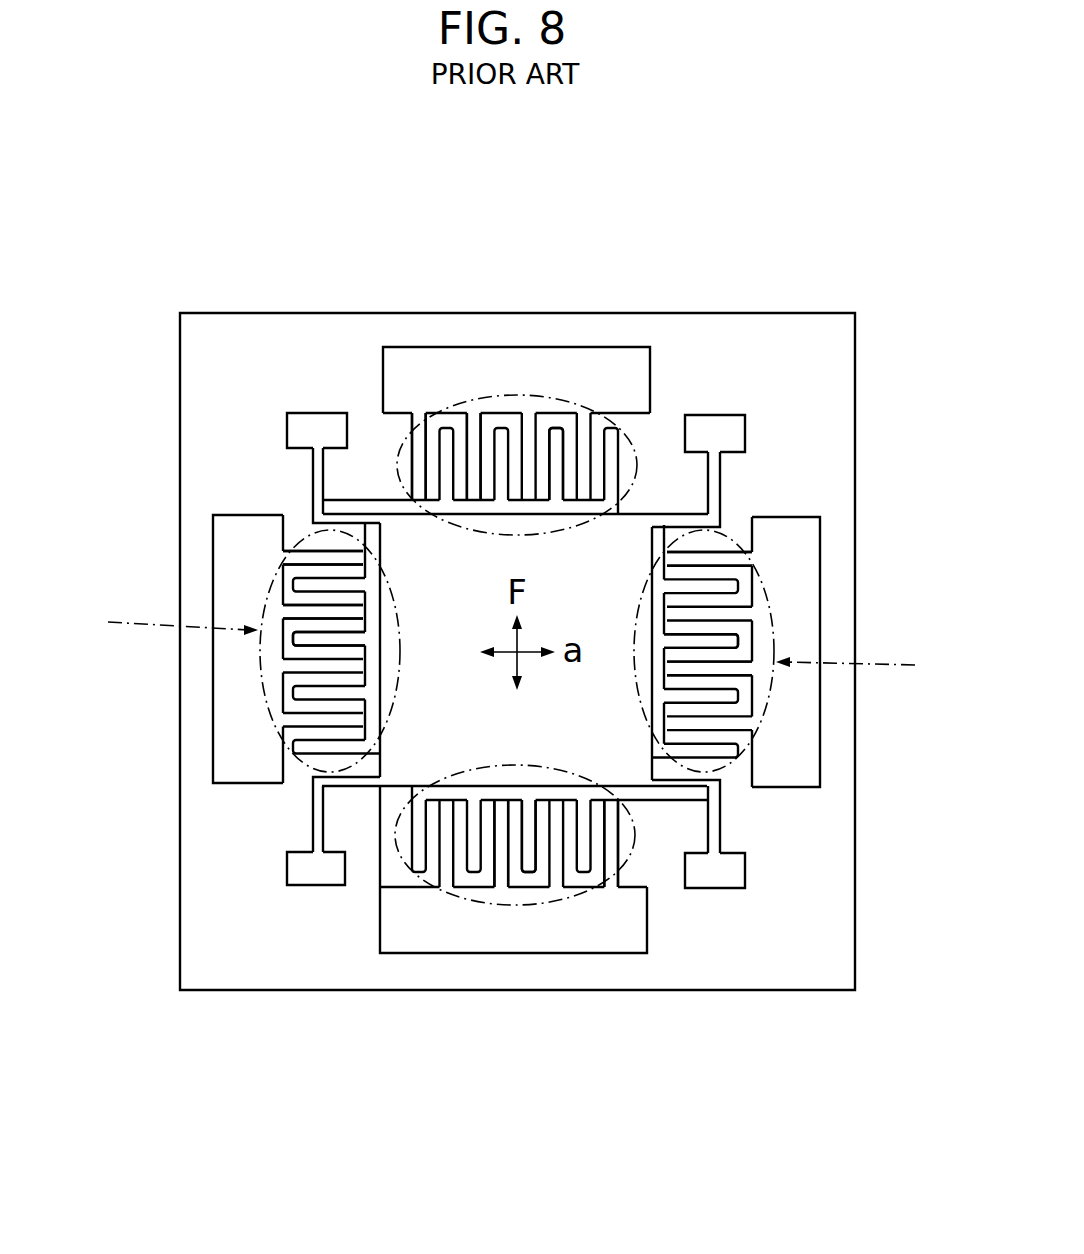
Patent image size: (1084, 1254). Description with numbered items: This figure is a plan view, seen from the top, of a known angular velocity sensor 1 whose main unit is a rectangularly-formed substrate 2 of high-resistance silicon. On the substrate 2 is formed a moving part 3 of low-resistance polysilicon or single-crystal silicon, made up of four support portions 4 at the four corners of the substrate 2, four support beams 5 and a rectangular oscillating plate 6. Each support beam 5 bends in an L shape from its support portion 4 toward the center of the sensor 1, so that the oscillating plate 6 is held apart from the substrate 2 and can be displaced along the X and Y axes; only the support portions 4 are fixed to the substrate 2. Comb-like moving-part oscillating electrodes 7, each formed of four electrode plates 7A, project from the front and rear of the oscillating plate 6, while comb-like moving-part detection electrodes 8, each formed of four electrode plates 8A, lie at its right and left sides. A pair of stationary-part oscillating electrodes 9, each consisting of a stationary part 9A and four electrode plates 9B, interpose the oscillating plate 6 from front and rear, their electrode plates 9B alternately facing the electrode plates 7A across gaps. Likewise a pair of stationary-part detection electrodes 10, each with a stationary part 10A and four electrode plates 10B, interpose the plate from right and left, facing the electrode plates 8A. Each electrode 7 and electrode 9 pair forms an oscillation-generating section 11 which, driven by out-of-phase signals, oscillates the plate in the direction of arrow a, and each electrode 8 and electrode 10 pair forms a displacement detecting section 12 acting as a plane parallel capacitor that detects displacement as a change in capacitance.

The angular velocity sensor 1 is at (800, 298).
The substrate 2 is at (822, 348).
The moving part 3 is at (390, 503).
The support portion 4 is at (308, 427).
The support beam 5 is at (728, 470).
The oscillating plate 6 is at (400, 758).
The moving-part oscillating electrode 7 is at (300, 758).
The electrode plate 7A is at (312, 640).
The moving-part detection electrode 8 is at (627, 430).
The electrode plate 8A is at (555, 437).
The stationary-part oscillating electrode 9 is at (320, 542).
The stationary part 9A is at (233, 727).
The electrode plate 9B is at (310, 612).
The stationary-part detection electrode 10 is at (405, 458).
The stationary part 10A is at (500, 360).
The electrode plate 10B is at (476, 446).
The oscillation-generating section 11 is at (513, 641).
The displacement detecting section 12 is at (587, 397).